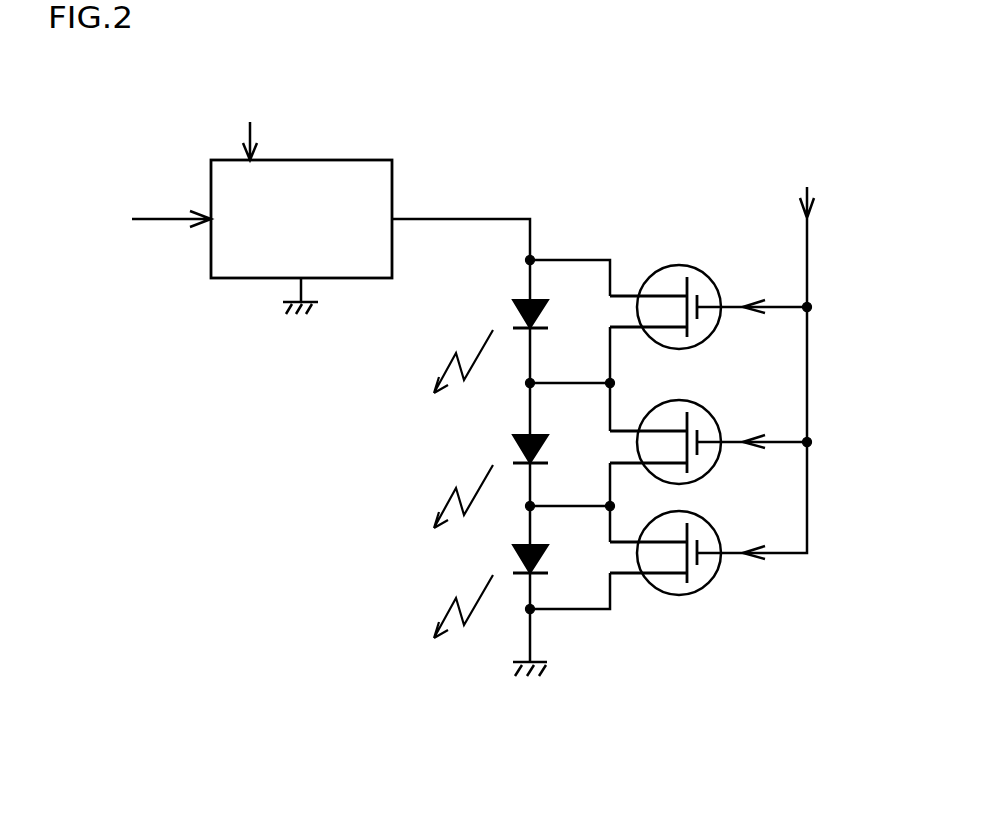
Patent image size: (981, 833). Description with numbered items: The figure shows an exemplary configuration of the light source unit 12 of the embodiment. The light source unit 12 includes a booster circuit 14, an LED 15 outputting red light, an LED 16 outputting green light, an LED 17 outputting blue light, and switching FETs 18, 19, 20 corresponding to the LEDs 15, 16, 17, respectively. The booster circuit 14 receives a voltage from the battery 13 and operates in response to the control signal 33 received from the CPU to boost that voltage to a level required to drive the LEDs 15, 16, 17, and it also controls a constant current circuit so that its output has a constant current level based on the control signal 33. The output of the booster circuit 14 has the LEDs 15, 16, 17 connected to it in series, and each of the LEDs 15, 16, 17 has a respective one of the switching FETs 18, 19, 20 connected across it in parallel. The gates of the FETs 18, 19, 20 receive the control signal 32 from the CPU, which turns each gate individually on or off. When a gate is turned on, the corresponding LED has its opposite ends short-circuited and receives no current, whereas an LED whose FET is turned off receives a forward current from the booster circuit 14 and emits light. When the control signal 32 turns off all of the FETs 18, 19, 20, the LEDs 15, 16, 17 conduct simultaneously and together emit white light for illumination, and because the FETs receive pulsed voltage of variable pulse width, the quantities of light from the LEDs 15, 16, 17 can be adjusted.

The light source unit 12 is at (745, 84).
The battery 13 is at (114, 221).
The booster circuit 14 is at (361, 160).
The LED 15 is at (535, 298).
The LED 16 is at (535, 433).
The LED 17 is at (535, 544).
The switching FET 18 is at (708, 272).
The switching FET 19 is at (708, 407).
The switching FET 20 is at (708, 518).
The control signal 32 is at (810, 232).
The control signal 33 is at (249, 127).